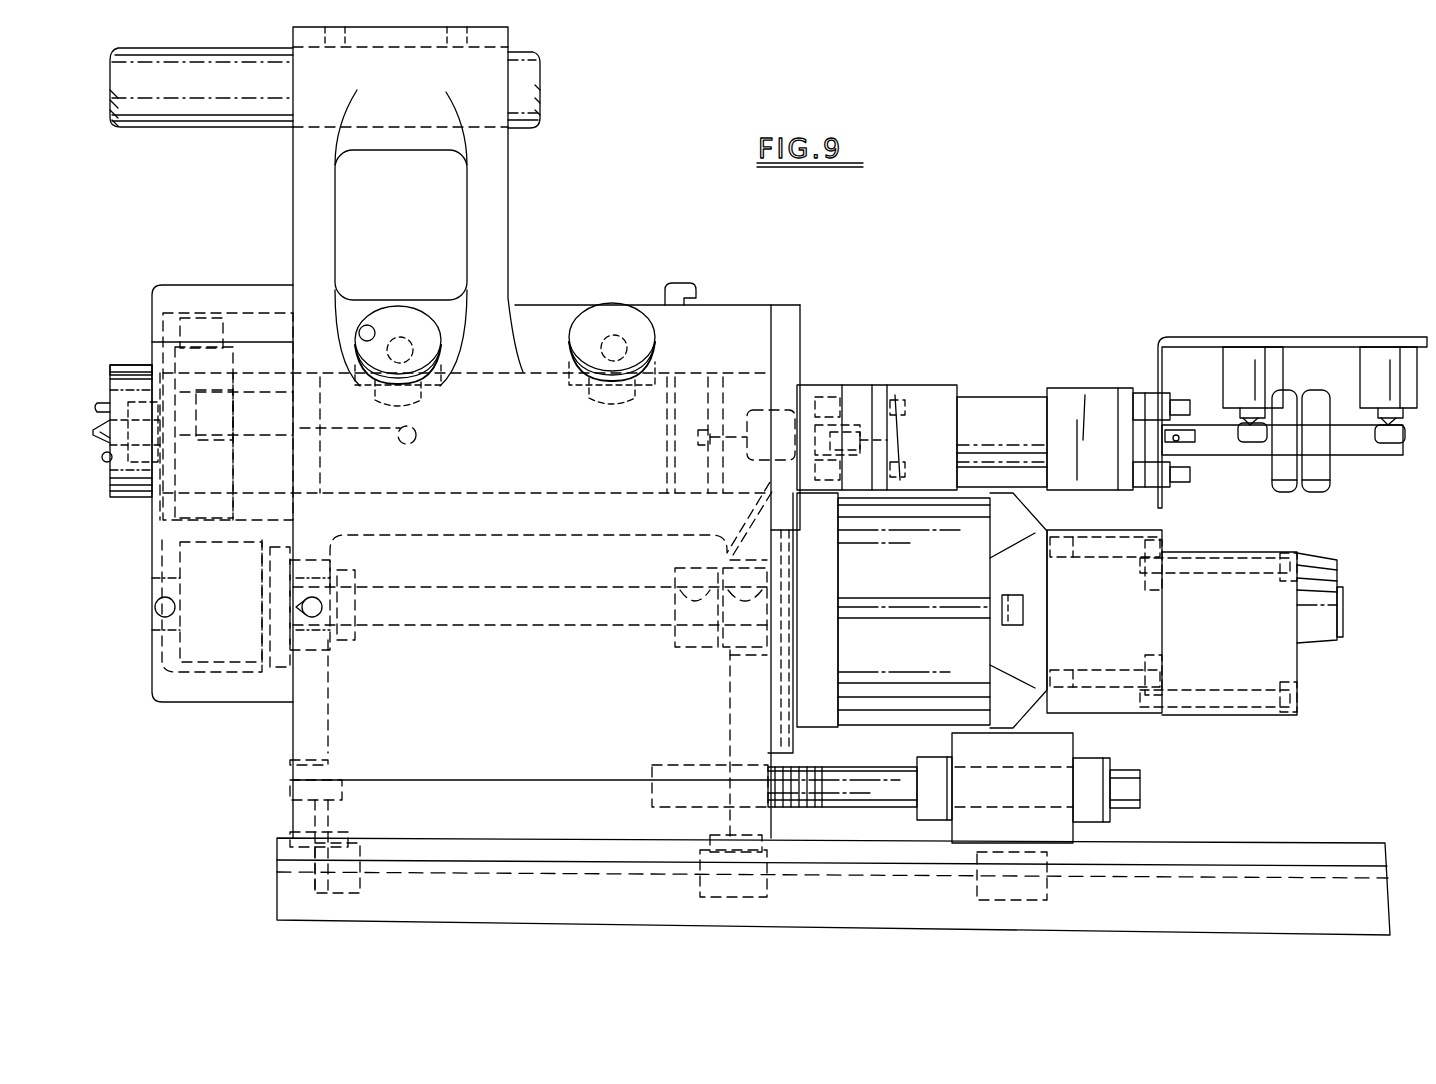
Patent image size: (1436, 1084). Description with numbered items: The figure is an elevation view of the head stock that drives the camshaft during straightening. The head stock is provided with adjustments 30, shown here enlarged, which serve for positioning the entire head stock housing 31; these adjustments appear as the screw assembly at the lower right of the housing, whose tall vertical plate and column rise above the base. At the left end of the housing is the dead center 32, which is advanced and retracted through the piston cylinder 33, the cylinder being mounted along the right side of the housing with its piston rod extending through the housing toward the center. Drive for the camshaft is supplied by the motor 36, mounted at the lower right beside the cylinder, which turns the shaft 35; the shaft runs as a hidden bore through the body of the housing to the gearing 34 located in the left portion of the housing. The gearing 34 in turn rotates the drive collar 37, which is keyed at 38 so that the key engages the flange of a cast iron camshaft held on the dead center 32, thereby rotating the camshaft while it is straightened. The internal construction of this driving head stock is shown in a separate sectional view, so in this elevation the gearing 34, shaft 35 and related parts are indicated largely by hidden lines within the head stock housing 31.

The adjustments 30 is at (1058, 748).
The head stock housing 31 is at (805, 365).
The dead center 32 is at (98, 448).
The piston cylinder 33 is at (1022, 391).
The gearing 34 is at (218, 683).
The shaft 35 is at (585, 630).
The motor 36 is at (1238, 703).
The drive collar 37 is at (142, 366).
The key 38 is at (100, 402).